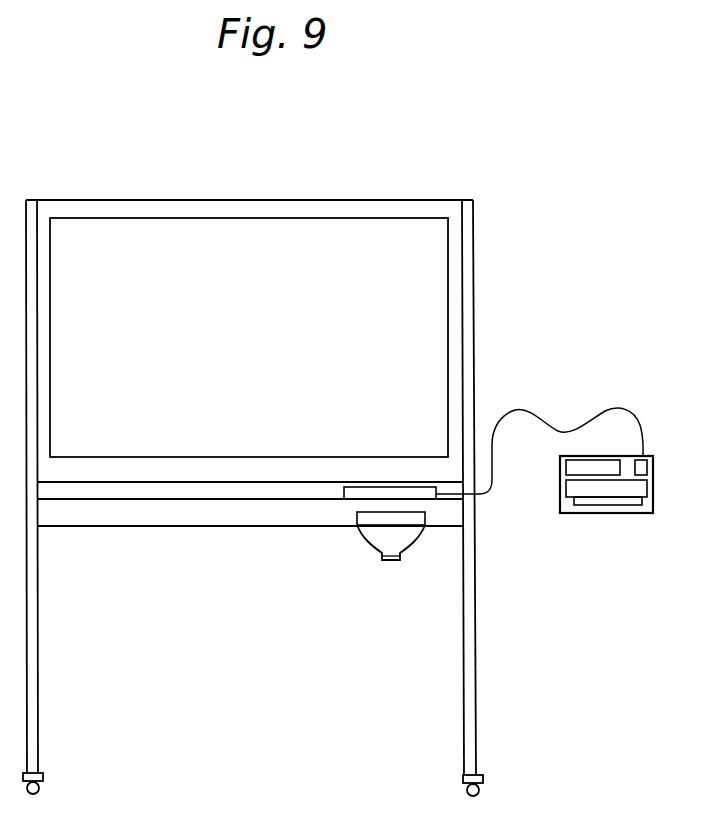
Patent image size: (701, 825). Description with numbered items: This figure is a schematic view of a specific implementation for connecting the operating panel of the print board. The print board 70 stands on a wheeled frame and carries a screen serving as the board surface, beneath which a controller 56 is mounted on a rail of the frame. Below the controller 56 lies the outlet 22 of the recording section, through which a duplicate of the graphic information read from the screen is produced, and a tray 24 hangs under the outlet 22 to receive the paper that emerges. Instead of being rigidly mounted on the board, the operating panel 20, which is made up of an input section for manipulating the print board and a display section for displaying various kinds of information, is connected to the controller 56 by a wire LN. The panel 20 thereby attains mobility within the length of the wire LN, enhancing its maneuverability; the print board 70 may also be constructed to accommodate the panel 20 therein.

The print board 70 is at (517, 209).
The controller 56 is at (390, 493).
The outlet 22 is at (356, 518).
The tray 24 is at (383, 539).
The wire LN is at (597, 410).
The operating panel 20 is at (614, 514).